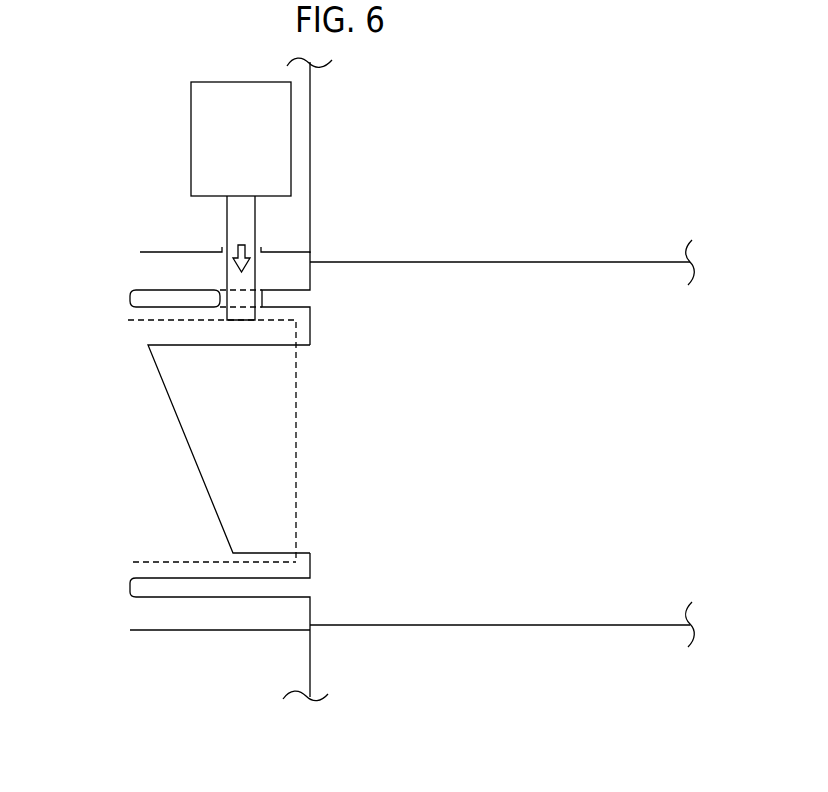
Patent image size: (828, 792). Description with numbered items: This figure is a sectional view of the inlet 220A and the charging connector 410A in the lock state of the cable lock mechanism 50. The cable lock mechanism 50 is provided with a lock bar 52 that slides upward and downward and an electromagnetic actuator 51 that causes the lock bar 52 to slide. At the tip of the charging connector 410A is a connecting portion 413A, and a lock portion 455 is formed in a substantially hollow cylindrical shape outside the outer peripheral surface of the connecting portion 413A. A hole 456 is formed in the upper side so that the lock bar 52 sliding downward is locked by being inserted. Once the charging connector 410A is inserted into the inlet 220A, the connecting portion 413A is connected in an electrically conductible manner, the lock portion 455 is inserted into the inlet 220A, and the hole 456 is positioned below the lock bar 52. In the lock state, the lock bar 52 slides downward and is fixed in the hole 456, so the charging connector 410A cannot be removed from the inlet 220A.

The cable lock mechanism 50 is at (179, 201).
The electromagnetic actuator 51 is at (191, 137).
The lock bar 52 is at (187, 258).
The lock portion 455 is at (282, 302).
The hole 456 is at (222, 307).
The connecting portion 413A is at (205, 486).
The inlet 220A is at (133, 562).
The charging connector 410A is at (559, 640).